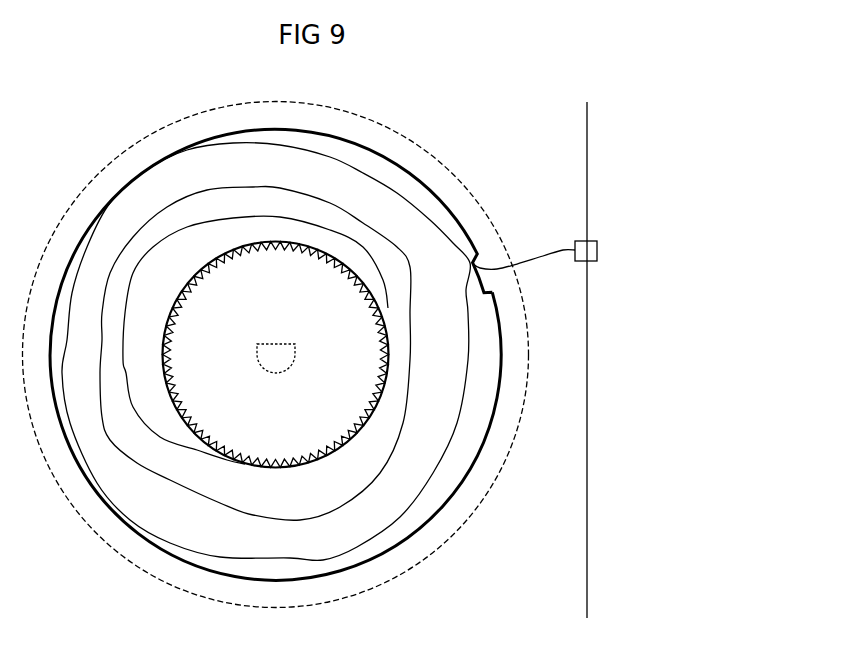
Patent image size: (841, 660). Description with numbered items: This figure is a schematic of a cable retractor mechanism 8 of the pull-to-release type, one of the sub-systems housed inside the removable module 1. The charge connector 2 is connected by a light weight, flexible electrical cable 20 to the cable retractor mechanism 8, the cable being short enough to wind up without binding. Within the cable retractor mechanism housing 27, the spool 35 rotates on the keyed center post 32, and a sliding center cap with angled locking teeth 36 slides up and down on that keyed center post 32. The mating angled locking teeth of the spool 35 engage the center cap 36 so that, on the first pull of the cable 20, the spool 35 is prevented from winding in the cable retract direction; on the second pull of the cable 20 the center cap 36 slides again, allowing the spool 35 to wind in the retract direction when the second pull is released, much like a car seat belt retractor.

The cable retractor mechanism 8 is at (419, 135).
The removable module 1 is at (590, 111).
The electrical cable 20 is at (342, 157).
The cable retractor mechanism housing 27 is at (450, 204).
The charge connector 2 is at (597, 251).
The spool 35 is at (389, 317).
The sliding center cap with angled locking teeth 36 is at (359, 373).
The keyed center post 32 is at (300, 363).